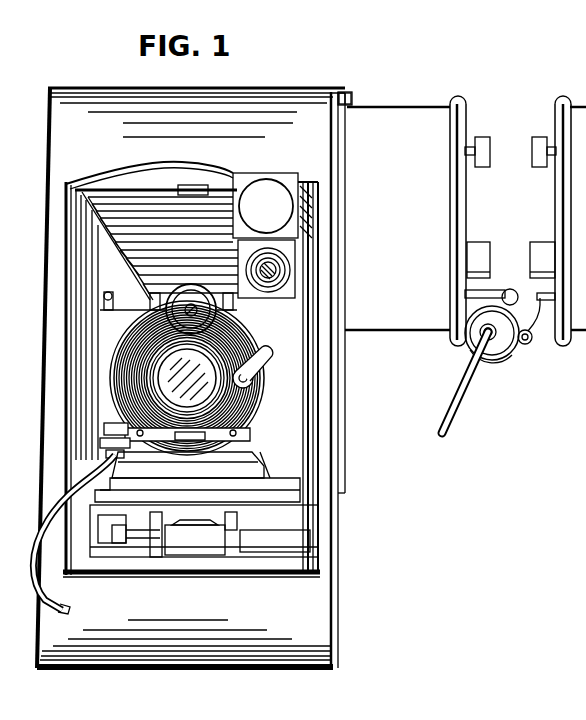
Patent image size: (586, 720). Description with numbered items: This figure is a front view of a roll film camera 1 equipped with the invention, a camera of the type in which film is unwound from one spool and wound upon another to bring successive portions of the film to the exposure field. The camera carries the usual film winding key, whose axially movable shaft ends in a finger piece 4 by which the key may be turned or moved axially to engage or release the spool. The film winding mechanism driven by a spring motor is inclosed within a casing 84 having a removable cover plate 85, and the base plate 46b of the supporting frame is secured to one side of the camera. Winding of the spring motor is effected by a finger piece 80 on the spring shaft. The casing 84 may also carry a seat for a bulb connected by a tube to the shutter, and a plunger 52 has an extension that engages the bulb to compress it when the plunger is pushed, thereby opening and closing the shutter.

The roll film camera 1 is at (333, 603).
The finger piece 4 is at (536, 149).
The base plate 46b is at (353, 97).
The plunger 52 is at (498, 361).
The finger piece 80 is at (536, 243).
The casing 84 is at (425, 322).
The removable cover plate 85 is at (555, 195).